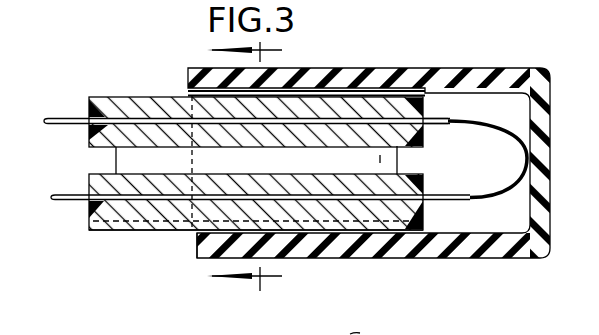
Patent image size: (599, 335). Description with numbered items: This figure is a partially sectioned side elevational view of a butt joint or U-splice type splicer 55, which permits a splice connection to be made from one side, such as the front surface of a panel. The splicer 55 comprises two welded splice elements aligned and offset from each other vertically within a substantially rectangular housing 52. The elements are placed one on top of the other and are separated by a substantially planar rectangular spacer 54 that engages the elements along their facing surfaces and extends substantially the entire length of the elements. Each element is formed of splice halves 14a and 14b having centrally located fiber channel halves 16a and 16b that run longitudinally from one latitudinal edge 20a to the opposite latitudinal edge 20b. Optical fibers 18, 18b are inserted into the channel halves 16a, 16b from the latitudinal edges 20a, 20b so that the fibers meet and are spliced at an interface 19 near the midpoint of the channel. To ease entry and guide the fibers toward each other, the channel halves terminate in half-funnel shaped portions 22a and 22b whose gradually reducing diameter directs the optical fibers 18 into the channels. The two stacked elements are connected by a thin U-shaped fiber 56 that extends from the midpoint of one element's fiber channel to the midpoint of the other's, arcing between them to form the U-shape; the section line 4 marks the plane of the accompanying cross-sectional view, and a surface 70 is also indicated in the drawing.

The section line 4- 4 is at (260, 168).
The splice half 14a is at (415, 149).
The splice half 14b is at (327, 92).
The fiber channel half 16a is at (408, 147).
The fiber channel half 16b is at (158, 119).
The optical fiber 18 is at (44, 119).
The optical fiber 18b is at (58, 200).
The interface 19 is at (256, 165).
The latitudinal edge 20a is at (428, 98).
The latitudinal edge 20b is at (89, 147).
The half-funnel shaped portion 22a is at (89, 129).
The half-funnel shaped portion 22b is at (97, 103).
The housing 52 is at (357, 246).
The spacer 54 is at (332, 160).
The splicer 55 is at (195, 236).
The U-shaped fiber 56 is at (517, 162).
The mounting surface 70 is at (398, 312).